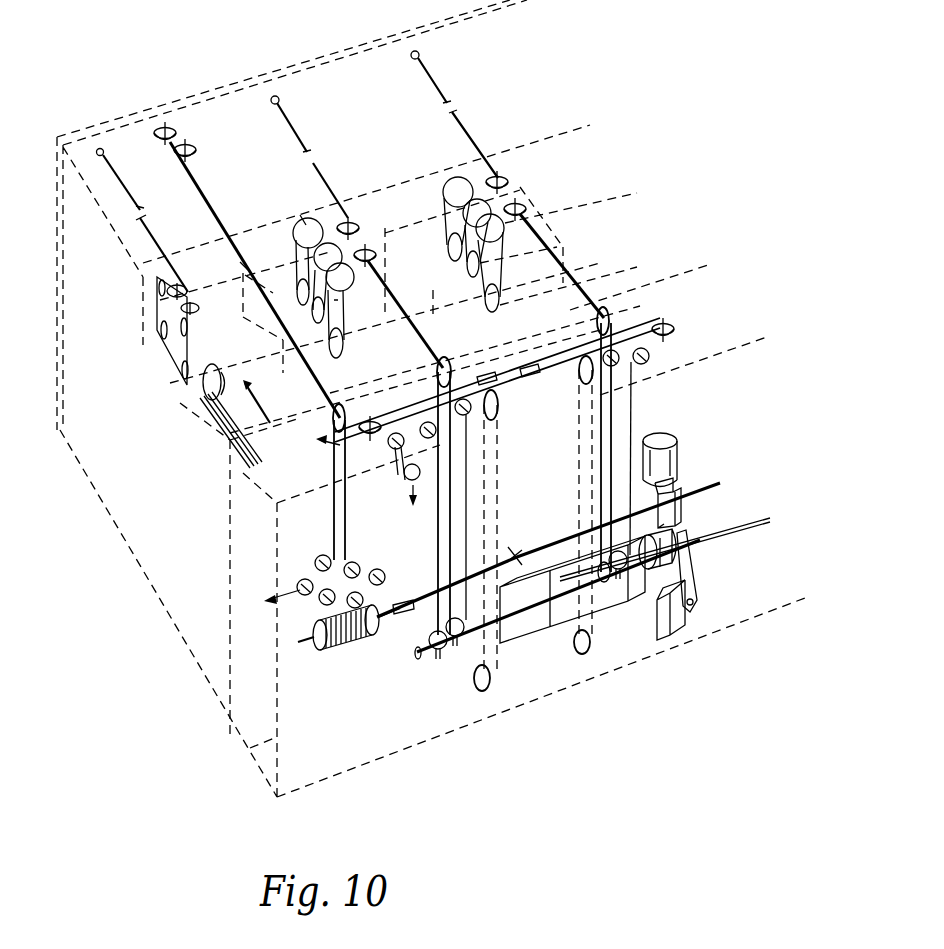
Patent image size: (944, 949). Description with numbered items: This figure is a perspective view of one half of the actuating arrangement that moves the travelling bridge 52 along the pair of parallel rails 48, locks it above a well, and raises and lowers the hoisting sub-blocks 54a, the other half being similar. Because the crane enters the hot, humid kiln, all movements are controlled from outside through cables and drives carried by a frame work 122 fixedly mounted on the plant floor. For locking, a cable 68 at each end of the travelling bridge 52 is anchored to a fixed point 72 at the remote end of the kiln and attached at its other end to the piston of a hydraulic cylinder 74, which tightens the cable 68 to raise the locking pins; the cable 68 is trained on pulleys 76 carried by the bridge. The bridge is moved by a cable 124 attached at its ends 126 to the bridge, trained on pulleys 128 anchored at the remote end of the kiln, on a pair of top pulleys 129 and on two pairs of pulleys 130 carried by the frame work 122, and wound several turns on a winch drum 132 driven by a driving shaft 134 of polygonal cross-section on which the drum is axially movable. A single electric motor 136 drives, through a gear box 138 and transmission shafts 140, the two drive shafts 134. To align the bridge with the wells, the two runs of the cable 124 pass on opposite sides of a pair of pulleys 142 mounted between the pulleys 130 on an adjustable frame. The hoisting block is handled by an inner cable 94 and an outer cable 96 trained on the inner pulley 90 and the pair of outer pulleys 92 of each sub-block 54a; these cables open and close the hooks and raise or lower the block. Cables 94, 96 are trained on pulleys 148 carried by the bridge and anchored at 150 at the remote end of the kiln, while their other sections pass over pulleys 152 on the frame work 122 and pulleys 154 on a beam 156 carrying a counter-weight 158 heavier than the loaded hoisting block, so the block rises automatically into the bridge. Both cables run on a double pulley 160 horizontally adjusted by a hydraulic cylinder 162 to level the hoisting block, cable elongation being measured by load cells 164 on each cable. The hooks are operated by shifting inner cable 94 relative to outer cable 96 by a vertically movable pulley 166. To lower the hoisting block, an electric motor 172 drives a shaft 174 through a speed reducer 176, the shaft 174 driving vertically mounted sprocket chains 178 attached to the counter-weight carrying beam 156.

The rails 48 is at (240, 450).
The travelling bridge 52 is at (168, 383).
The sub-block 54a is at (567, 253).
The cable 68 is at (147, 233).
The fixed point 72 is at (102, 148).
The hydraulic cylinder 74 is at (240, 418).
The pulleys 76 is at (187, 288).
The inner pulley 90 is at (277, 338).
The outer pulleys 92 is at (447, 230).
The inner cable 94 is at (436, 527).
The outer cable 96 is at (343, 307).
The frame work 122 is at (250, 748).
The cable 124 is at (213, 218).
The ends 126 is at (243, 269).
The pulleys 128 is at (188, 140).
The top pulleys 129 is at (345, 403).
The pulleys 130 is at (307, 593).
The winch drum 132 is at (327, 648).
The driving shaft 134 is at (387, 623).
The electric motor 136 is at (678, 452).
The gear box 138 is at (678, 493).
The transmission shafts 140 is at (540, 548).
The pulleys 142 is at (306, 575).
The pulleys 148 is at (365, 248).
The anchor point 150 is at (284, 96).
The pulleys 152 is at (462, 370).
The pulleys 154 is at (447, 663).
The counter-weight carrying beam 156 is at (427, 657).
The counter-weight 158 is at (540, 627).
The double pulley 160 is at (363, 437).
The hydraulic cylinder 162 is at (335, 447).
The load cells 164 is at (505, 381).
The vertically movable pulley 166 is at (411, 480).
The electric motor 172 is at (660, 570).
The shaft 174 is at (657, 620).
The speed reducer 176 is at (673, 627).
The sprocket chains 178 is at (590, 623).